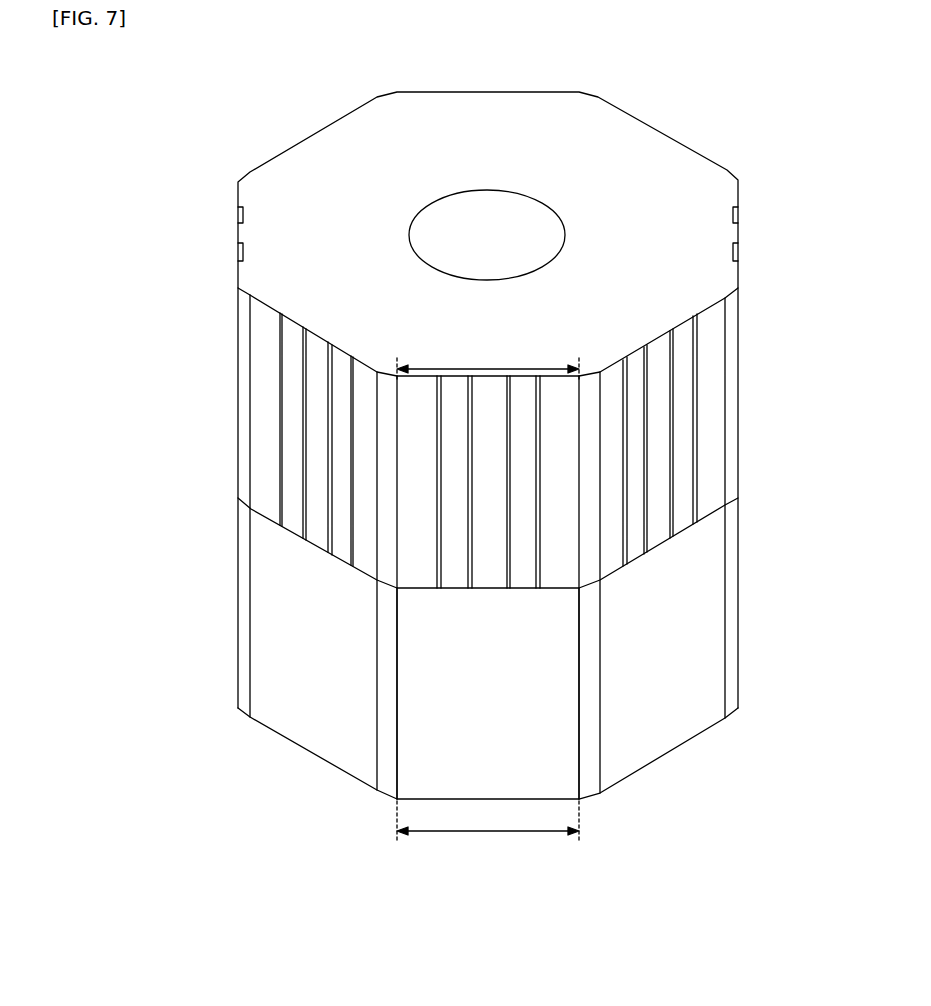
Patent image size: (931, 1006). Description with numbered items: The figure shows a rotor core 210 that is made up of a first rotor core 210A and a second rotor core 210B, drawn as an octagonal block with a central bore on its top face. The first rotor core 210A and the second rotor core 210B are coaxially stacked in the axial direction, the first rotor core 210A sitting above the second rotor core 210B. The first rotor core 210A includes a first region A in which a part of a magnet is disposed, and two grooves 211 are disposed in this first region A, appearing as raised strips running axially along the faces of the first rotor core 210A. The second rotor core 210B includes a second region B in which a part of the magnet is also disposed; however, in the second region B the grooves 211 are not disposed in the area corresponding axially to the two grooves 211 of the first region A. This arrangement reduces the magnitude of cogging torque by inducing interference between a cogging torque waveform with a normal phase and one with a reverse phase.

The rotor core 210 is at (206, 79).
The first rotor core 210A is at (212, 371).
The second rotor core 210B is at (212, 645).
The grooves 211 is at (450, 377).
The first region A is at (488, 369).
The second region B is at (487, 832).